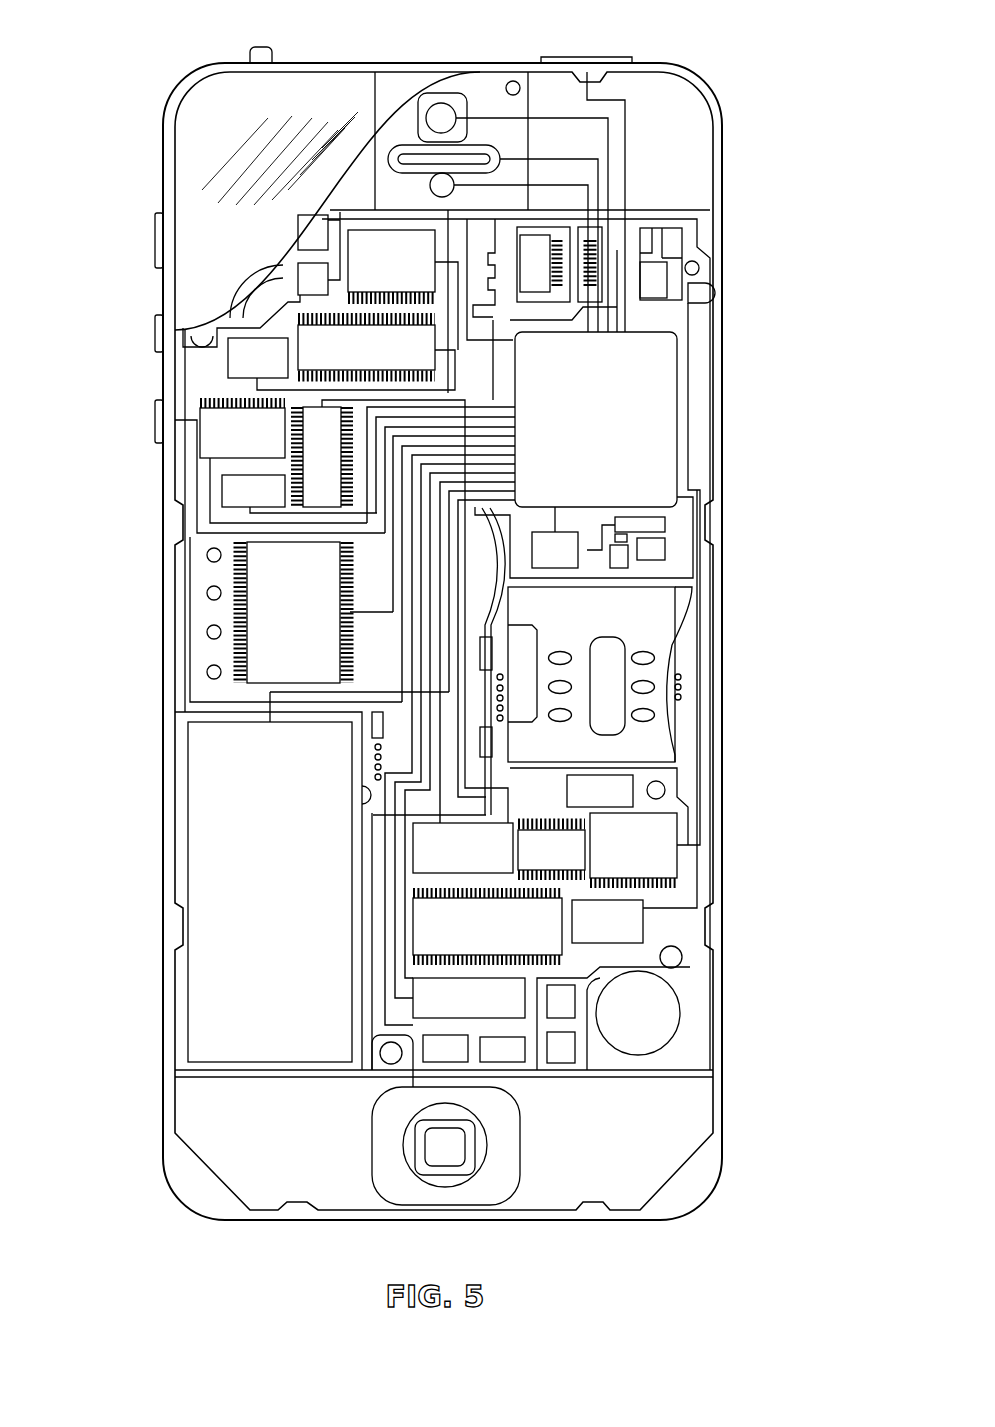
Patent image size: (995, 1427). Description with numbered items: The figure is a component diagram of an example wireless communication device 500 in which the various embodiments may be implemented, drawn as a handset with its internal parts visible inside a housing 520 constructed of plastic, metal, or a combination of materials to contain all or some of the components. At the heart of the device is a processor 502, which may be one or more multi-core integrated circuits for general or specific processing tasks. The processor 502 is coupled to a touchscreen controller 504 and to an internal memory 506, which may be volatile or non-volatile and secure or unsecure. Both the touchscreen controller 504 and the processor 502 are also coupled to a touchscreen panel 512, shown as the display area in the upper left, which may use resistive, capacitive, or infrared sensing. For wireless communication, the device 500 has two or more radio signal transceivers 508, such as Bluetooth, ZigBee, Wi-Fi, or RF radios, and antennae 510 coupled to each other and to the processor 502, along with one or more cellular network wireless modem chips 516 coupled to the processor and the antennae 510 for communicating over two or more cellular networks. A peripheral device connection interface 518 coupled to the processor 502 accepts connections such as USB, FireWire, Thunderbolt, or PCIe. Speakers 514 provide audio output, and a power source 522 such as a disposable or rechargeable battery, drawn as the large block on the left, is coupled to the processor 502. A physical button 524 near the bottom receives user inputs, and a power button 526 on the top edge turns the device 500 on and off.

The wireless communication device 500 is at (117, 52).
The processor 502 is at (596, 419).
The touchscreen controller 504 is at (391, 264).
The internal memory 506 is at (366, 347).
The radio signal transceivers 508 is at (625, 237).
The antennae 510 is at (670, 282).
The touchscreen panel 512 is at (205, 163).
The speakers 514 is at (396, 150).
The cellular network wireless modem chip 516 is at (487, 926).
The peripheral device connection interface 518 is at (469, 998).
The housing 520 is at (725, 1098).
The power source 522 is at (273, 891).
The physical button 524 is at (480, 1152).
The power button 526 is at (586, 57).